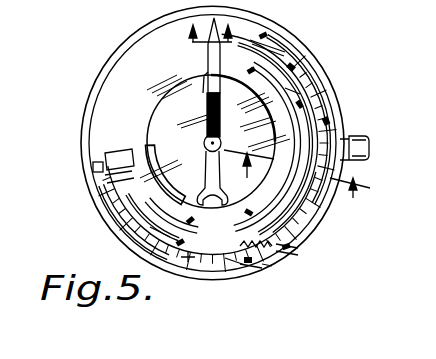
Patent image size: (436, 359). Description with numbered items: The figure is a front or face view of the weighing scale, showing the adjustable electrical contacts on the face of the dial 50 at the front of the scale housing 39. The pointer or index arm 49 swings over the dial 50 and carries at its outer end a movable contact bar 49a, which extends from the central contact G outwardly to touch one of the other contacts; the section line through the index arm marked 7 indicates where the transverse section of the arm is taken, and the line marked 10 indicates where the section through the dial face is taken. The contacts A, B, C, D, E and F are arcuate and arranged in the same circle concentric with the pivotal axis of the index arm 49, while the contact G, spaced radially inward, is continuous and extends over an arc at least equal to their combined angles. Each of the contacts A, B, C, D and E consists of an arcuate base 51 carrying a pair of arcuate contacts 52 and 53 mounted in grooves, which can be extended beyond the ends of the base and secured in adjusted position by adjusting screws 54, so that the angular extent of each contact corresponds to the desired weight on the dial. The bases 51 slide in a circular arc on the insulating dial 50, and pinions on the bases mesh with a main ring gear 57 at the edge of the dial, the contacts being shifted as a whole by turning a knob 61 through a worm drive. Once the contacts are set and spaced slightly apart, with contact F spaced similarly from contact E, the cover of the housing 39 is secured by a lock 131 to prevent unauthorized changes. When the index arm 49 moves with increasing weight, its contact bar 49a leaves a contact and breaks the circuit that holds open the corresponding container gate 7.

The gate 7 is at (205, 35).
The section line 10- 10 is at (303, 182).
The housing 39 is at (87, 102).
The pointer or index arm 49 is at (213, 100).
The movable contact bar 49a is at (218, 70).
The dial 50 is at (268, 37).
The arcuate base 51 is at (238, 108).
The arcuate contact 52 is at (221, 255).
The arcuate contact 53 is at (172, 242).
The adjusting screws 54 is at (238, 254).
The main ring gear 57 is at (288, 239).
The knob 61 is at (205, 258).
The lock 131 is at (369, 148).
The electrical contact A is at (261, 55).
The electrical contact B is at (290, 110).
The electrical contact C is at (321, 132).
The electrical contact D is at (257, 255).
The electrical contact E is at (112, 183).
The electrical contact F is at (93, 168).
The central contact G is at (151, 142).